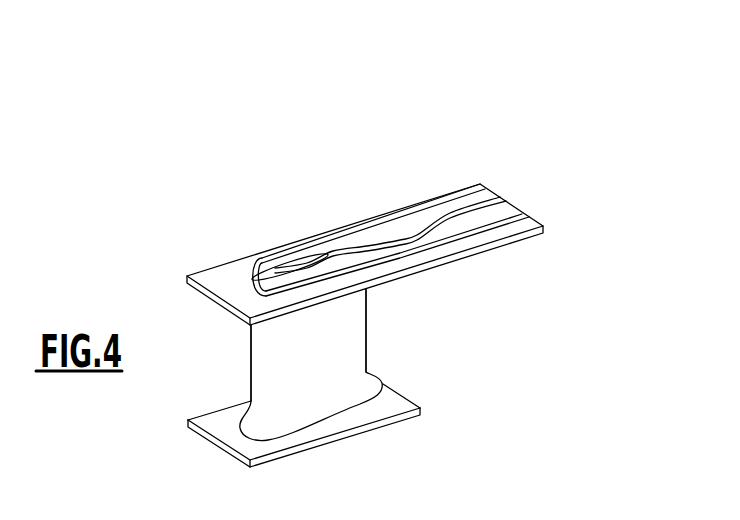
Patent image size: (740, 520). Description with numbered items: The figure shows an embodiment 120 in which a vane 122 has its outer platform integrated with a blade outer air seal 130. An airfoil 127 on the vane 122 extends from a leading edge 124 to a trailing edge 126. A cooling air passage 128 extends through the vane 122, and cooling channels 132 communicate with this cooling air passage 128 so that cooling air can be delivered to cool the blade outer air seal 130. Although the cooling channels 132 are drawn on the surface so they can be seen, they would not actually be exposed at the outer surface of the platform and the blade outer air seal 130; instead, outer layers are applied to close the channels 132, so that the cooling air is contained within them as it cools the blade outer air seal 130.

The embodiment 120 is at (570, 278).
The vane 122 is at (270, 379).
The leading edge 124 is at (250, 342).
The trailing edge 126 is at (367, 333).
The airfoil 127 is at (297, 370).
The cooling air passage 128 is at (278, 272).
The blade outer air seal 130 is at (513, 199).
The cooling channels 132 is at (452, 243).